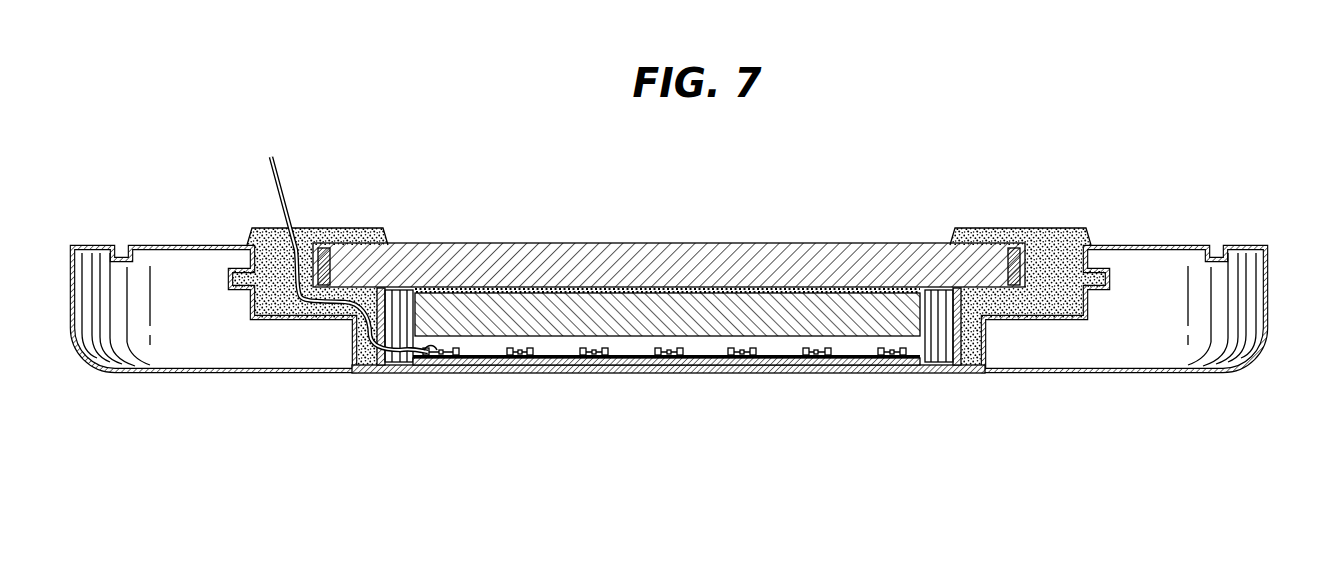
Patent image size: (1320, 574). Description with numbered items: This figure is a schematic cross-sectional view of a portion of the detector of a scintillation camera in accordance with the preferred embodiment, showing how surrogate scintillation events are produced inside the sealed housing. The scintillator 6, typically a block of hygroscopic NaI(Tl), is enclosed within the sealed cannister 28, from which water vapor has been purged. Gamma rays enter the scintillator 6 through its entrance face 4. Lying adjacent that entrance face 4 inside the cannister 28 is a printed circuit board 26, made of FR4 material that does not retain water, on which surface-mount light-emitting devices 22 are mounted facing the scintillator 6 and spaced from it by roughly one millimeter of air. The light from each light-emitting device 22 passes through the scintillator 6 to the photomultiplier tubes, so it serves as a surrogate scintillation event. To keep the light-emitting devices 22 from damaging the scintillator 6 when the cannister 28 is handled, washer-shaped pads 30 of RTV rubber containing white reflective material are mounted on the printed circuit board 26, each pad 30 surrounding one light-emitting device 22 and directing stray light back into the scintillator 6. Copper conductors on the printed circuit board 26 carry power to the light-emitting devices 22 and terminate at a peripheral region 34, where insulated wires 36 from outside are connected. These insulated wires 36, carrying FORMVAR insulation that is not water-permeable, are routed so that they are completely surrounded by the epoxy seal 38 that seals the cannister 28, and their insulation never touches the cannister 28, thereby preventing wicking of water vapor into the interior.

The entrance face 4 is at (627, 340).
The scintillator 6 is at (564, 318).
The light-emitting devices 22 is at (671, 357).
The printed circuit board 26 is at (786, 368).
The cannister 28 is at (866, 375).
The pads 30 is at (476, 362).
The peripheral region 34 is at (431, 368).
The insulated wires 36 is at (283, 180).
The epoxy seal 38 is at (312, 228).